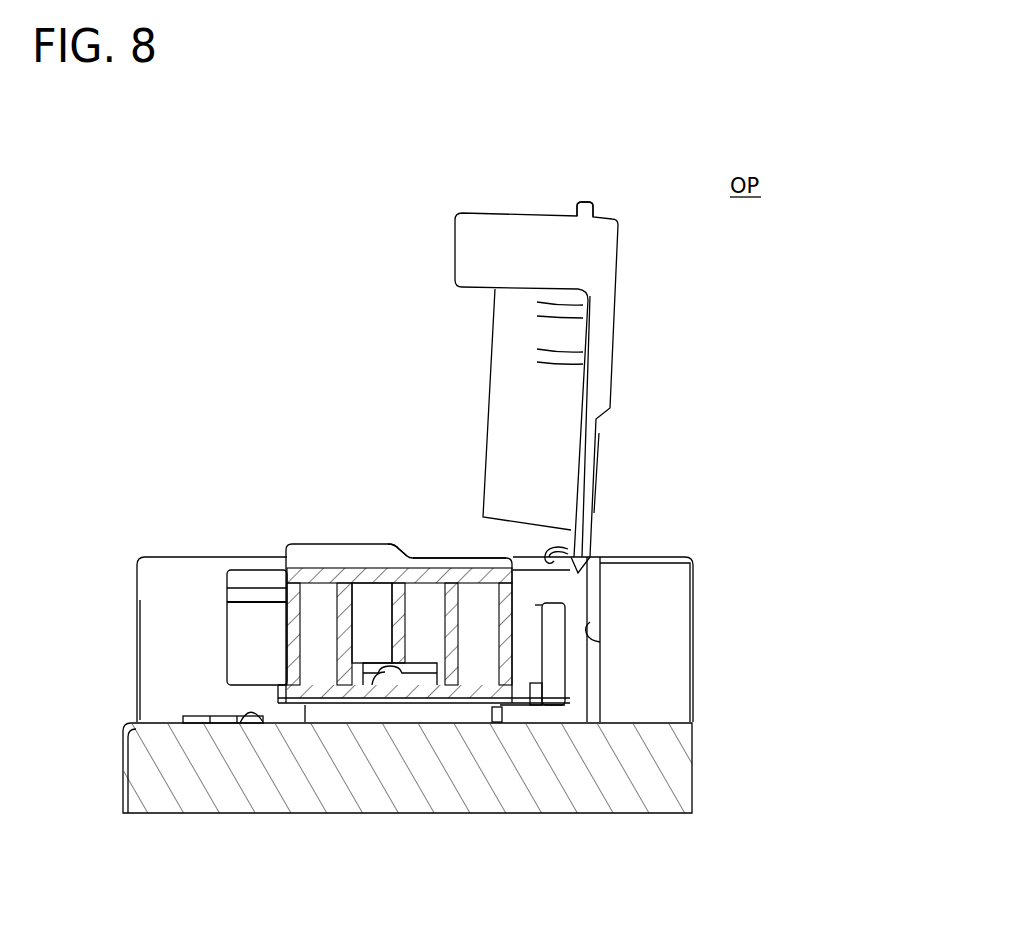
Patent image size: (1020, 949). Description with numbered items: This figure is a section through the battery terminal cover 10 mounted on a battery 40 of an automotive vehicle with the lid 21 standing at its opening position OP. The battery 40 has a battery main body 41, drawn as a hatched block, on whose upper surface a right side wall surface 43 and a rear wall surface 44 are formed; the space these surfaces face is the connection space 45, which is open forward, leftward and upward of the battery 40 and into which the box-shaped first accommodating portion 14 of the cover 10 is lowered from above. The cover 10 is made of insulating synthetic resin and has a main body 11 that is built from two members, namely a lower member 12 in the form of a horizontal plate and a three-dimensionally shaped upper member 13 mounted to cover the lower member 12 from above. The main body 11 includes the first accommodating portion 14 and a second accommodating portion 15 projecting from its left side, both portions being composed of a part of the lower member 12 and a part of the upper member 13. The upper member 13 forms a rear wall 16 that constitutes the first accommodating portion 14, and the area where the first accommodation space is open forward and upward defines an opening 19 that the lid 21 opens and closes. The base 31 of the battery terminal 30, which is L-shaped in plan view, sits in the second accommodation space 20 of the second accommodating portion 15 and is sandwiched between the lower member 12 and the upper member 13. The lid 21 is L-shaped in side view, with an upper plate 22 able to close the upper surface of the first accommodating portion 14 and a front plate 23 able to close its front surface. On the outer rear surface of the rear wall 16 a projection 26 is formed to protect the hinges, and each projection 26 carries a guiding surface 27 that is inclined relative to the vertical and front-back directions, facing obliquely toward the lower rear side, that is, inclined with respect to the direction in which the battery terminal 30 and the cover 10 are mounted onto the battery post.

The battery terminal cover 10 is at (355, 270).
The main body 11 is at (523, 672).
The lower member 12 is at (474, 694).
The upper member 13 is at (323, 573).
The first accommodating portion 14 is at (376, 527).
The second accommodating portion 15 is at (387, 556).
The rear wall 16 is at (567, 662).
The opening 19 is at (248, 582).
The second accommodation space 20 is at (388, 676).
The lid 21 is at (571, 370).
The upper plate 22 is at (619, 360).
The front plate 23 is at (508, 214).
The projection 26 is at (568, 587).
The guiding surface 27 is at (590, 622).
The battery terminal 30 is at (373, 640).
The base 31 is at (375, 668).
The battery 40 is at (172, 492).
The battery main body 41 is at (245, 768).
The right side wall surface 43 is at (167, 602).
The rear wall surface 44 is at (608, 592).
The connection space 45 is at (243, 718).